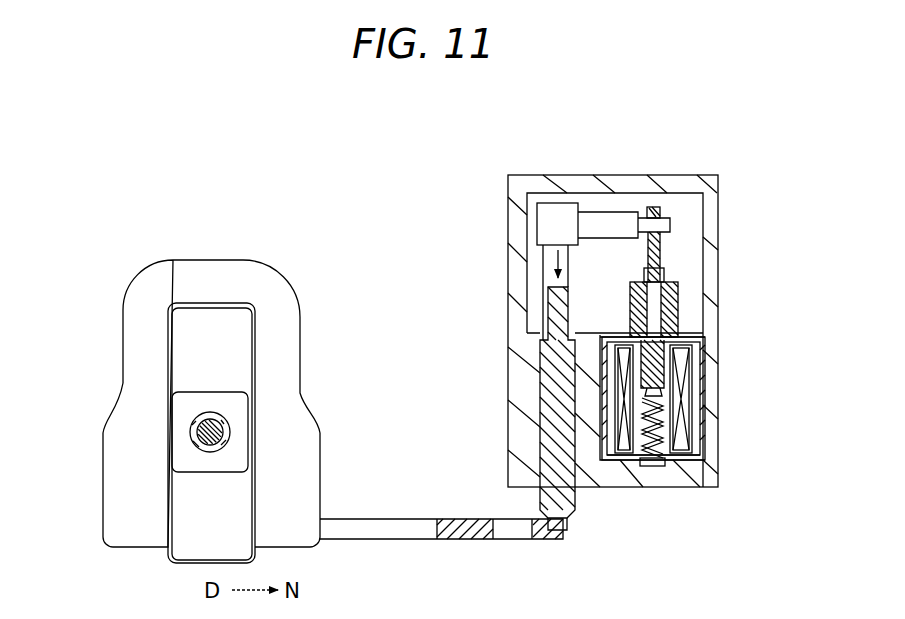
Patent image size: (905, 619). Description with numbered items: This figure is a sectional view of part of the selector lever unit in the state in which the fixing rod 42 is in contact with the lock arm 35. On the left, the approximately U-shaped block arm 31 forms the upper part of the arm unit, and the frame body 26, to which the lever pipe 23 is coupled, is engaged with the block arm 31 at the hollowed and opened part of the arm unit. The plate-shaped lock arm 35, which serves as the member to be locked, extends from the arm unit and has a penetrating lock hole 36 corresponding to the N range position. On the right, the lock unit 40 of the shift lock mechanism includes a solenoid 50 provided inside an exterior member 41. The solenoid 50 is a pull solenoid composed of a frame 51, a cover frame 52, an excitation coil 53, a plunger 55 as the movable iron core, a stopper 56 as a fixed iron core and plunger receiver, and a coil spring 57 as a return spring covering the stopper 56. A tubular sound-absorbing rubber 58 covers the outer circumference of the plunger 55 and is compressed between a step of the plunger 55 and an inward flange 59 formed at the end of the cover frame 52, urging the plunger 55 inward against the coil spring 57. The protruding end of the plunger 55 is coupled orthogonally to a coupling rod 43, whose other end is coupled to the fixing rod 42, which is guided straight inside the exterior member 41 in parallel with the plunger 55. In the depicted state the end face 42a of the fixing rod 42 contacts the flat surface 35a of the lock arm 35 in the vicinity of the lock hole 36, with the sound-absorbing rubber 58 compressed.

The lever pipe 23 is at (193, 433).
The frame body 26 is at (182, 517).
The block arm 31 is at (122, 332).
The lock arm 35 is at (450, 521).
The flat surface 35a is at (548, 540).
The lock hole 36 is at (515, 540).
The lock unit 40 is at (618, 303).
The exterior member 41 is at (650, 175).
The fixing rod 42 is at (538, 387).
The end face 42a is at (565, 523).
The coupling rod 43 is at (605, 212).
The solenoid 50 is at (622, 322).
The frame 51 is at (700, 402).
The cover frame 52 is at (678, 292).
The excitation coil 53 is at (702, 382).
The plunger 55 is at (663, 262).
The stopper 56 is at (650, 466).
The coil spring 57 is at (703, 440).
The sound-absorbing rubber 58 is at (678, 303).
The inward flange 59 is at (668, 274).